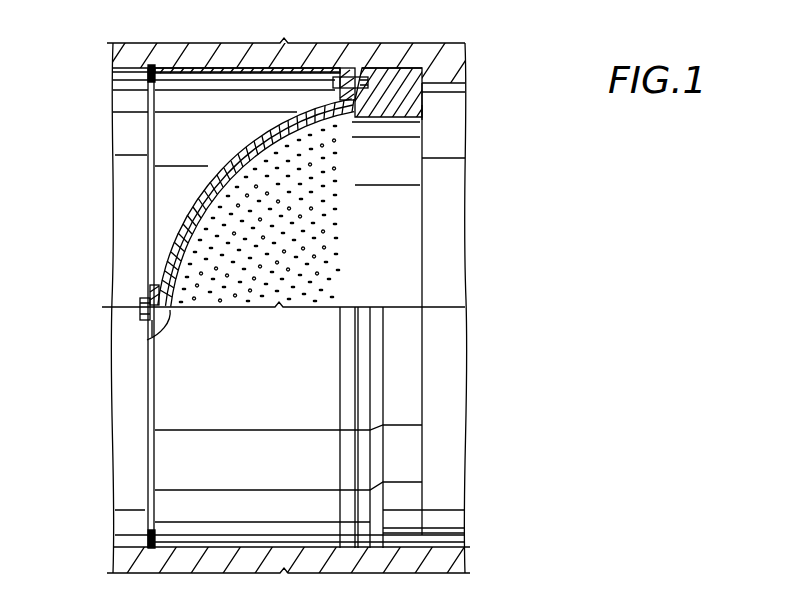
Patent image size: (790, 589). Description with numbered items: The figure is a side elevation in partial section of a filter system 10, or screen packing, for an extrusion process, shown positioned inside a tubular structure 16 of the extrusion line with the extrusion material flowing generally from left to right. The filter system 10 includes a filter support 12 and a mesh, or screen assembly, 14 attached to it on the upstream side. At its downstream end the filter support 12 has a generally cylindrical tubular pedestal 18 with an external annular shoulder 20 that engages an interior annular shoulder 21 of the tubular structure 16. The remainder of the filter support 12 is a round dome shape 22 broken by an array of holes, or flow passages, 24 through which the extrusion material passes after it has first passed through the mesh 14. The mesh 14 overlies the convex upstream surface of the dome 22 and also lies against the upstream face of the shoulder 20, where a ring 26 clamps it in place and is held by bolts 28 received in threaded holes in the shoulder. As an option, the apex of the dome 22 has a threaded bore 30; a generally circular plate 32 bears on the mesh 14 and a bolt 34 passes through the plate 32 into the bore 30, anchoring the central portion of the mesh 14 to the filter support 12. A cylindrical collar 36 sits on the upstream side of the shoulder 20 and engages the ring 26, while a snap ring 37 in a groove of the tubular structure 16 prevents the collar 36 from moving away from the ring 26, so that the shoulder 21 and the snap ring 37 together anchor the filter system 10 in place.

The filter system 10 is at (98, 428).
The filter support 12 is at (403, 240).
The mesh, or screen assembly 14 is at (230, 158).
The tubular structure 16 is at (453, 283).
The tubular pedestal, or foundation 18 is at (423, 107).
The external annular shoulder 20 is at (380, 78).
The interior annular shoulder 21 is at (388, 73).
The dome shape 22 is at (225, 202).
The array of holes, or flow passages 24 is at (338, 170).
The ring 26 is at (340, 98).
The bolts 28 is at (332, 80).
The threaded bore 30 is at (168, 312).
The circular plate 32 is at (152, 292).
The bolt 34 is at (143, 302).
The cylindrical collar 36 is at (177, 68).
The snap ring 37 is at (150, 114).